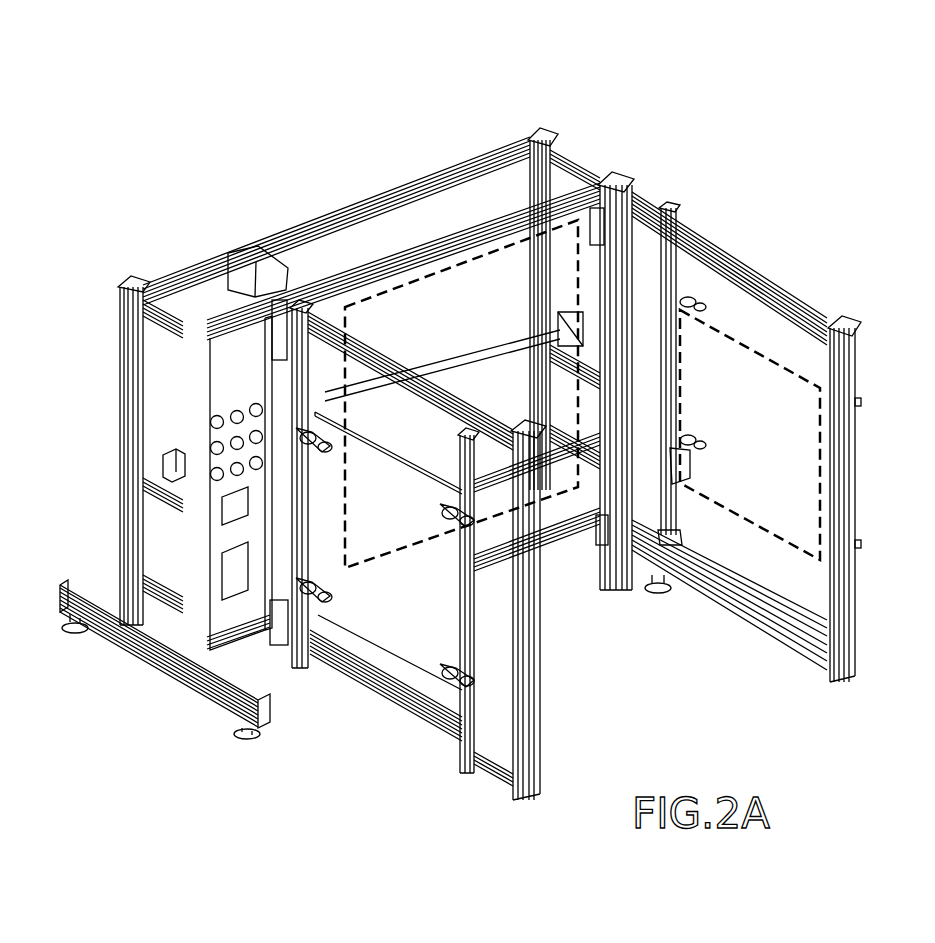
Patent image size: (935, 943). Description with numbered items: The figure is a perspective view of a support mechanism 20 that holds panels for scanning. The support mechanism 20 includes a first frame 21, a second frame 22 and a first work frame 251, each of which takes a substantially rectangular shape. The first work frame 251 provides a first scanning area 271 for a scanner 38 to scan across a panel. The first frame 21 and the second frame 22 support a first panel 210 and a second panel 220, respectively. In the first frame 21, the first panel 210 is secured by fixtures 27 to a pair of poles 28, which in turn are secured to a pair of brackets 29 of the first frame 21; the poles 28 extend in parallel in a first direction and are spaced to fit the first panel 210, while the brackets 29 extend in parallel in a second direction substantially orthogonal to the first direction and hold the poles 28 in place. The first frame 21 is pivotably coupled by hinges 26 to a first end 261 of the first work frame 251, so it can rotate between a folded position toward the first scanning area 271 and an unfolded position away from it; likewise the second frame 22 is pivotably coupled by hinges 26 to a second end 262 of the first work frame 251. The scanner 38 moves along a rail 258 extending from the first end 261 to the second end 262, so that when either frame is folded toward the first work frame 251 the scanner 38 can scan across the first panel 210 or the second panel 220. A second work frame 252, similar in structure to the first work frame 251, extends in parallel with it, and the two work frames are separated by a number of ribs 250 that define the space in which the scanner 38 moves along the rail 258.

The support mechanism 20 is at (146, 198).
The first frame 21 is at (535, 672).
The second frame 22 is at (857, 625).
The hinges 26 is at (276, 348).
The fixtures 27 is at (696, 447).
The poles 28 is at (665, 370).
The brackets 29 is at (388, 183).
The scanner 38 is at (247, 258).
The first panel 210 is at (384, 452).
The second panel 220 is at (742, 498).
The ribs 250 is at (566, 162).
The first work frame 251 is at (611, 172).
The second work frame 252 is at (541, 124).
The rail 258 is at (462, 365).
The first end 261 is at (122, 690).
The second end 262 is at (636, 96).
The first scanning area 271 is at (397, 530).